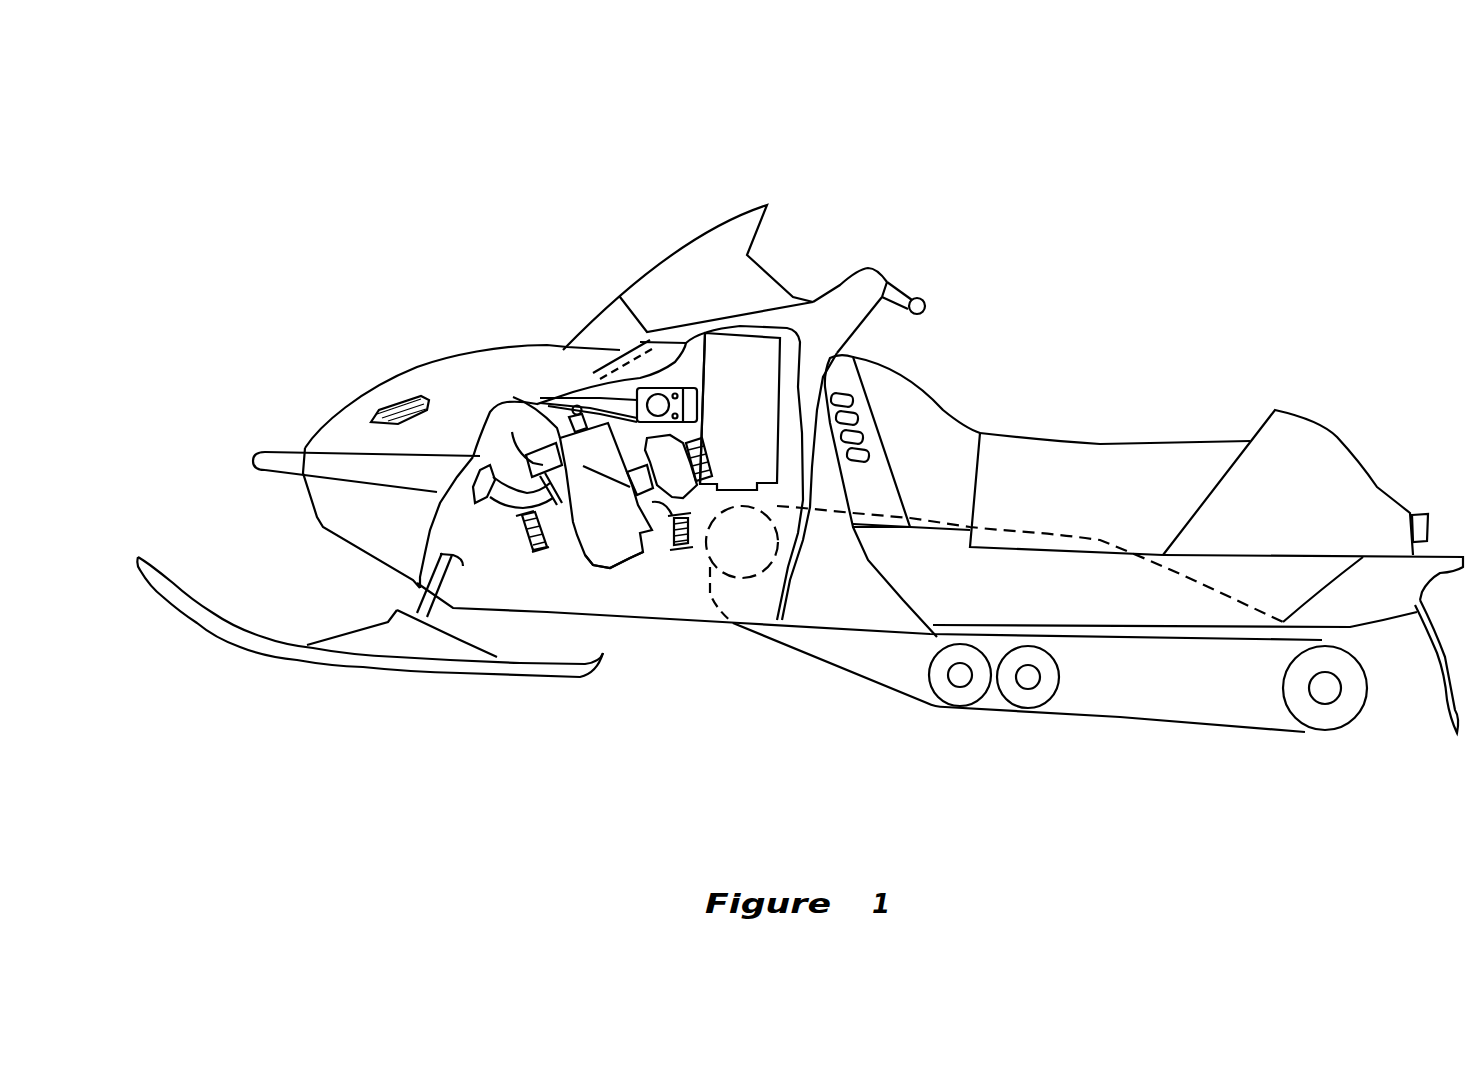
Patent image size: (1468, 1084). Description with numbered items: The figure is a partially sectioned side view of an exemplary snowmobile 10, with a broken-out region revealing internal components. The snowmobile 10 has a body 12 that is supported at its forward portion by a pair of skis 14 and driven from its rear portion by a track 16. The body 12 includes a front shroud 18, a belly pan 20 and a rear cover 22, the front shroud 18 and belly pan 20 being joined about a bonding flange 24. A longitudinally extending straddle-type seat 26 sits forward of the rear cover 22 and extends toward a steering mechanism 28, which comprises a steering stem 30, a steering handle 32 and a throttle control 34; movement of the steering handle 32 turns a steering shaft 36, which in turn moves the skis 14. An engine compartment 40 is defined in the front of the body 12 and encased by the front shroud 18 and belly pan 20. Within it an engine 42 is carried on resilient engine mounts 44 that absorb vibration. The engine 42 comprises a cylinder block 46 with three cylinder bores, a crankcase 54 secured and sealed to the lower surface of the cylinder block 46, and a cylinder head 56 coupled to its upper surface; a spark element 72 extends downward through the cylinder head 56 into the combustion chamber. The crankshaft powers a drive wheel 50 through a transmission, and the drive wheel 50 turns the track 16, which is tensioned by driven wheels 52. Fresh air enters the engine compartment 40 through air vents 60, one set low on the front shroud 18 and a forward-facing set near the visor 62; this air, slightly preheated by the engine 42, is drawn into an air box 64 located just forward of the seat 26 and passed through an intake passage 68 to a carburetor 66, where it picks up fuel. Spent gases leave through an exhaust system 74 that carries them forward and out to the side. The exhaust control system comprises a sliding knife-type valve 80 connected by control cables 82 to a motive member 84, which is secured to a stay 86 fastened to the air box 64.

The snowmobile 10 is at (1056, 303).
The body 12 is at (940, 363).
The skis 14 is at (520, 673).
The track 16 is at (1150, 720).
The front shroud 18 is at (513, 363).
The belly pan 20 is at (350, 523).
The rear cover 22 is at (1337, 457).
The bonding flange 24 is at (263, 461).
The seat 26 is at (1070, 457).
The steering mechanism 28 is at (907, 285).
The steering stem 30 is at (827, 313).
The steering handle 32 is at (873, 277).
The throttle control 34 is at (898, 298).
The steering shaft 36 is at (417, 602).
The engine compartment 40 is at (450, 528).
The engine 42 is at (623, 570).
The engine mounts 44 is at (520, 547).
The cylinder block 46 is at (585, 465).
The drive wheel 50 is at (773, 600).
The driven wheels 52 is at (1057, 677).
The crankcase 54 is at (598, 567).
The cylinder head 56 is at (563, 430).
The air vent 60 is at (613, 357).
The visor 62 is at (706, 245).
The air box 64 is at (750, 347).
The carburetor 66 is at (677, 477).
The intake passage 68 is at (694, 442).
The spark element 72 is at (565, 423).
The exhaust system 74 is at (480, 473).
The sliding knife-type valve 80 is at (512, 432).
The control cables 82 is at (510, 400).
The motive member 84 is at (657, 388).
The stay 86 is at (687, 392).